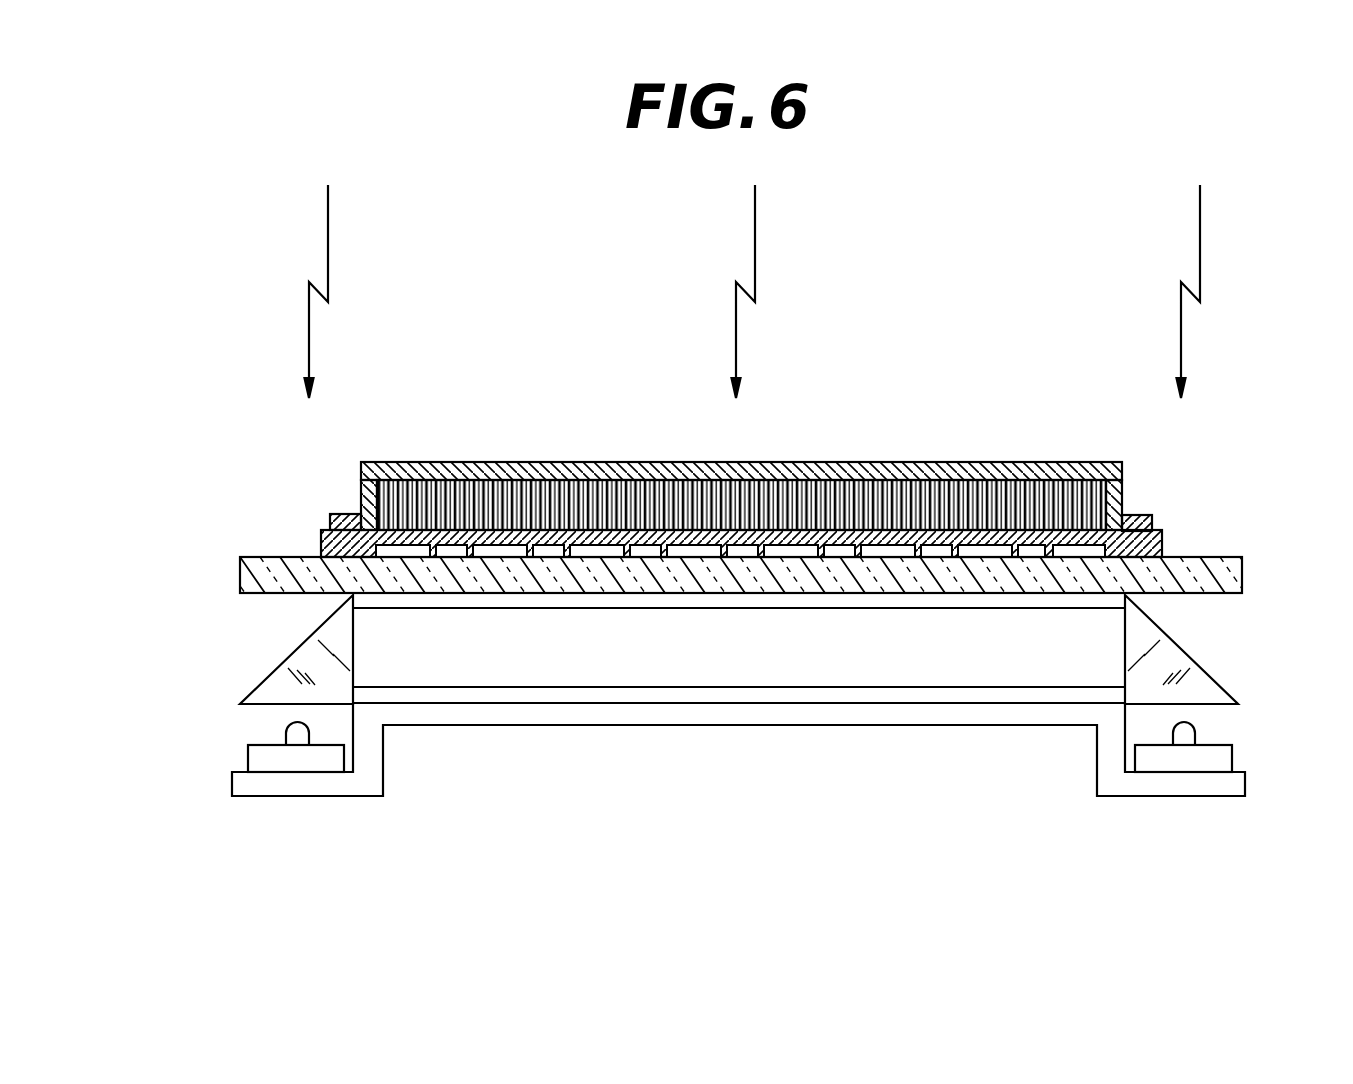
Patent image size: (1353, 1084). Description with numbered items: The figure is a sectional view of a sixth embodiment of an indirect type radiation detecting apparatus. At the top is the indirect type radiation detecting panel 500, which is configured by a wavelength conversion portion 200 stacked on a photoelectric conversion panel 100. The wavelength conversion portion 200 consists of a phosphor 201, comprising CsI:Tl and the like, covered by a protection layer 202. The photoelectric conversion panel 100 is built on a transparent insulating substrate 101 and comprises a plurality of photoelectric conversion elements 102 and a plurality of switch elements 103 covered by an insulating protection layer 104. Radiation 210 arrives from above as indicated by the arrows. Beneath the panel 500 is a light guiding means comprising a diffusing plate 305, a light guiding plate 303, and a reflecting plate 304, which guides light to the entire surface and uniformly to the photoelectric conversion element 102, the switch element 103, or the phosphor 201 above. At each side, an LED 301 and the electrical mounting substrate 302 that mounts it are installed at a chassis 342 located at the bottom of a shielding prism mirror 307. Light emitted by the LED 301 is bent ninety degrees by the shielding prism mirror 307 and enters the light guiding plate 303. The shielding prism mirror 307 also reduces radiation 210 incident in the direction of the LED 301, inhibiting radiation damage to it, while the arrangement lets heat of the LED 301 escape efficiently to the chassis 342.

The indirect type radiation detecting panel 500 is at (717, 493).
The wavelength conversion portion 200 is at (640, 458).
The photoelectric conversion panel 100 is at (751, 491).
The transparent insulating substrate 101 is at (1230, 575).
The photoelectric conversion element 102 is at (1088, 552).
The switch element 103 is at (1032, 553).
The insulating protection layer 104 is at (321, 536).
The phosphor 201 is at (808, 495).
The protection layer 202 is at (963, 470).
The radiation 210 is at (755, 243).
The LED 301 is at (287, 724).
The electrical mounting substrate 302 is at (287, 760).
The light guiding plate 303 is at (638, 672).
The reflecting plate 304 is at (737, 695).
The diffusing plate 305 is at (508, 600).
The shielding prism mirror 307 is at (292, 660).
The chassis 342 is at (823, 715).